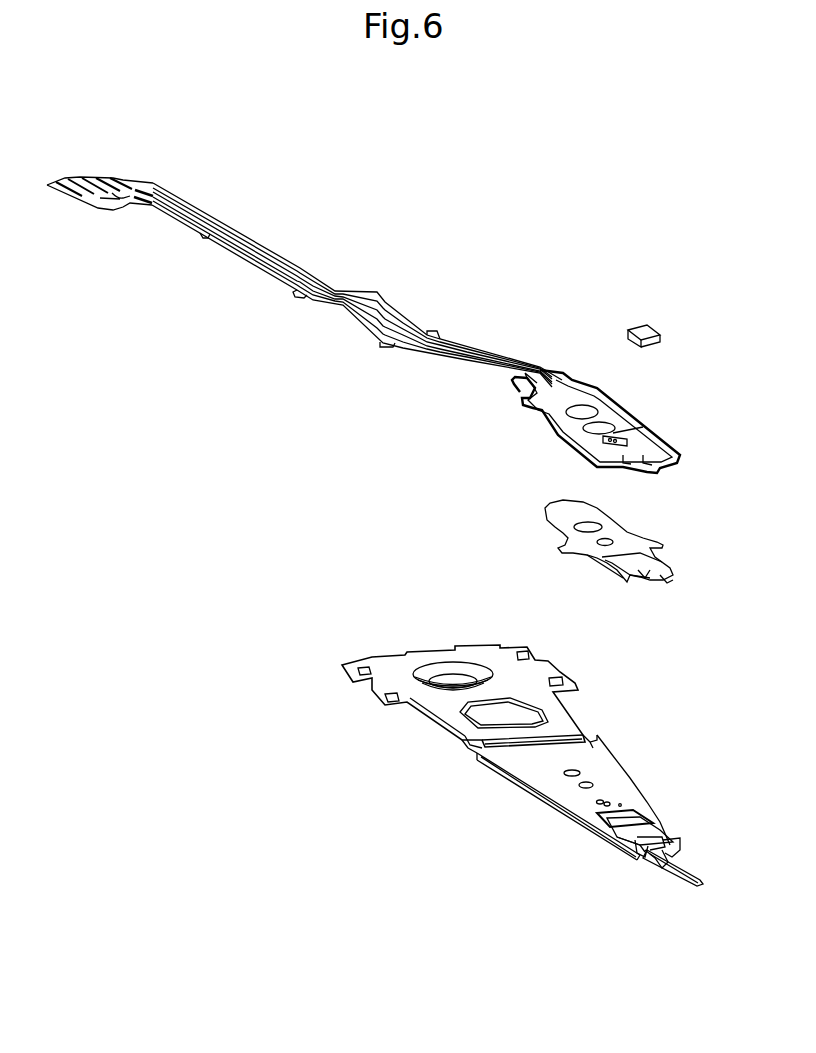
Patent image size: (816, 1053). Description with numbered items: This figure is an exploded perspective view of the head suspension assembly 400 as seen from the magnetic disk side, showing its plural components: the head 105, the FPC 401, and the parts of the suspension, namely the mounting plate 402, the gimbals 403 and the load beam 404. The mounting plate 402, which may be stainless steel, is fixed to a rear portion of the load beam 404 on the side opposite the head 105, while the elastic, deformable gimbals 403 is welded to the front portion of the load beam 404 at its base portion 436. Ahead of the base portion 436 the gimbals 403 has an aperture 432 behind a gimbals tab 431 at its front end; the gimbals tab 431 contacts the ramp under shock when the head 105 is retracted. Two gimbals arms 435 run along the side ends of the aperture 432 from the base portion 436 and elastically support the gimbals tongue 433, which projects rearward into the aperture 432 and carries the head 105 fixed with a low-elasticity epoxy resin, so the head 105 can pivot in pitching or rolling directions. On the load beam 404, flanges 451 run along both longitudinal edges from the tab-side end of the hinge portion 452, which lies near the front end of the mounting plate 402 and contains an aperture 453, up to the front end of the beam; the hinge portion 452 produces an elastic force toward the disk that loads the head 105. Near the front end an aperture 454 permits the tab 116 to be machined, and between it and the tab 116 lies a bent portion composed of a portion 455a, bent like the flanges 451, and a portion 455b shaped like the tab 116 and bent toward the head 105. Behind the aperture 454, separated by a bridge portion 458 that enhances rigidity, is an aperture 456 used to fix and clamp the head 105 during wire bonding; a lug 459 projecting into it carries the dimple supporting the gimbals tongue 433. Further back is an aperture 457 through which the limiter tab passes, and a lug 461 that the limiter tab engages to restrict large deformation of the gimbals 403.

The head suspension assembly 400 is at (492, 230).
The head 105 is at (648, 330).
The FPC (Flexible Printed Circuit) 401 is at (647, 427).
The gimbals 403 is at (611, 545).
The base portion 436 is at (548, 507).
The aperture 432 is at (637, 560).
The gimbals arms 435 is at (602, 567).
The gimbals tongue 433 is at (637, 583).
The gimbals tab 431 is at (667, 583).
The mounting plate 402 is at (427, 720).
The aperture 453 is at (583, 728).
The load beam 404 is at (603, 750).
The flanges 451 is at (518, 787).
The hinge portion 452 is at (465, 752).
The lug 459 is at (597, 815).
The aperture 457 is at (613, 812).
The lug 461 is at (613, 805).
The aperture 456 is at (617, 837).
The bridge portion 458 is at (625, 840).
The aperture 454 is at (662, 840).
The portion of the bent portion 455a is at (662, 860).
The portion of the bent portion 455b is at (665, 842).
The tab 116 is at (697, 878).